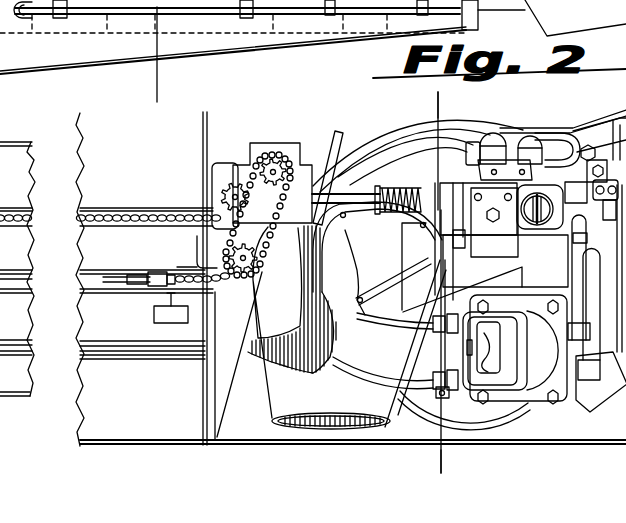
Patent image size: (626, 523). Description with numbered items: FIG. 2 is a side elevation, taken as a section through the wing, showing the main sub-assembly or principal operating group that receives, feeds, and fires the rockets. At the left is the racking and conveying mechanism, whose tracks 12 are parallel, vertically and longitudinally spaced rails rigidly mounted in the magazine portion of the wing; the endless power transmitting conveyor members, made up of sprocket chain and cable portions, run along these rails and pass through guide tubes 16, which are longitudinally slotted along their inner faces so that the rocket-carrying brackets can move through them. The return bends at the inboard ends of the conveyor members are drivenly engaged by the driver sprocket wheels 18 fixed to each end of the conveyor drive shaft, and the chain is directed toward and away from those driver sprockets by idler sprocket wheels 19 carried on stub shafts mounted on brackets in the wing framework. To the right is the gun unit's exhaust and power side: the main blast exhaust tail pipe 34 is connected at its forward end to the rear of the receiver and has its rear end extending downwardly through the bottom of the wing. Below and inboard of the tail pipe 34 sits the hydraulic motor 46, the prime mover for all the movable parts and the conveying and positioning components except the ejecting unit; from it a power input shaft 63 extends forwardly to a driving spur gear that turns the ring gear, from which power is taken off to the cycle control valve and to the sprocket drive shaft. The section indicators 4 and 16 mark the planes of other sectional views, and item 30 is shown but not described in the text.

The section line 4- 4 is at (157, 82).
The tracks 12 is at (134, 172).
The guide tubes 16 is at (438, 99).
The driver sprocket wheels 18 is at (267, 163).
The idler sprocket wheels 19 is at (220, 193).
The control box 30 is at (168, 313).
The main blast exhaust tail pipe 34 is at (320, 398).
The hydraulic motor 46 is at (541, 362).
The power input shaft 63 is at (362, 120).